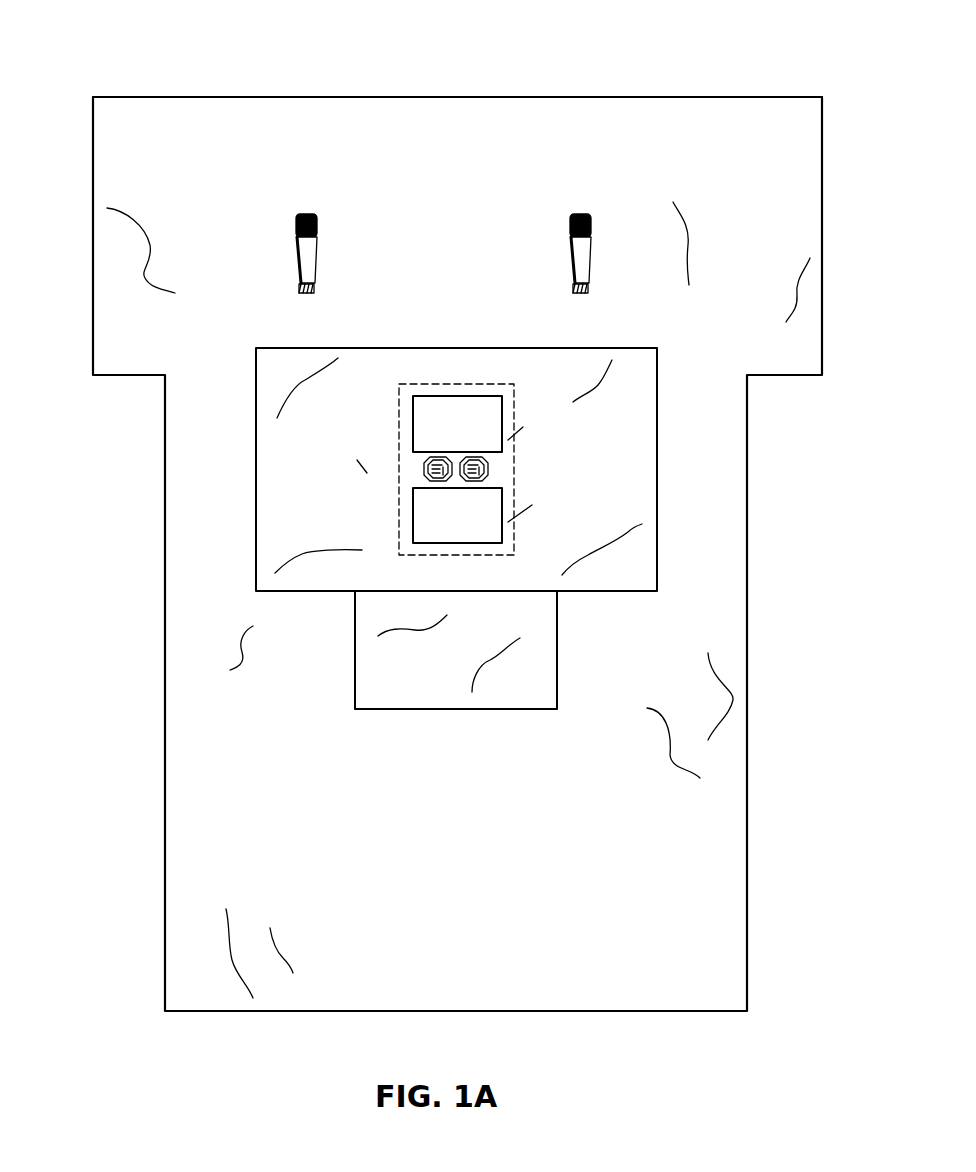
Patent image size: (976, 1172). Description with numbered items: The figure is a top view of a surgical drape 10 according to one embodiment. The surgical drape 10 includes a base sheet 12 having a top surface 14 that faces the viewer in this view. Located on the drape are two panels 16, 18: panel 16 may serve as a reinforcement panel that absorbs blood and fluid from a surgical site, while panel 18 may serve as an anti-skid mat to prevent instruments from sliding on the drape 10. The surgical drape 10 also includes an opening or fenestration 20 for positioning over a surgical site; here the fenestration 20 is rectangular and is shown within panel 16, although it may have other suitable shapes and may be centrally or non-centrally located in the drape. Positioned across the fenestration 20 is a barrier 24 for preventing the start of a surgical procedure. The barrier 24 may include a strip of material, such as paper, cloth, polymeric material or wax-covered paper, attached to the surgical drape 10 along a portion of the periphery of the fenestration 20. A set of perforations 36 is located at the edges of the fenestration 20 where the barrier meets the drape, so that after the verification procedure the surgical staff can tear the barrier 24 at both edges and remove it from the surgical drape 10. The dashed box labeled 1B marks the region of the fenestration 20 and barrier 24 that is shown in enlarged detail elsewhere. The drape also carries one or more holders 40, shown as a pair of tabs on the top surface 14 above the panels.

The surgical drape 10 is at (110, 30).
The base sheet 12 is at (630, 128).
The top surface 14 is at (105, 155).
The panel 16 is at (272, 537).
The panel 18 is at (530, 677).
The detail view region 1B is at (395, 447).
The fenestration 20 is at (472, 408).
The barrier 24 is at (497, 468).
The perforations 36 is at (497, 464).
The holders 40 is at (306, 258).